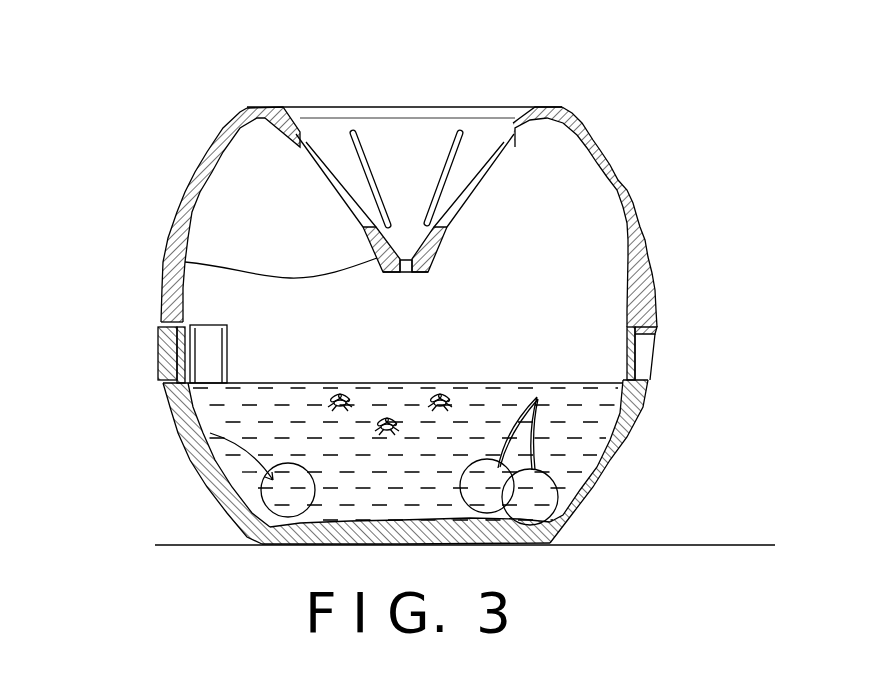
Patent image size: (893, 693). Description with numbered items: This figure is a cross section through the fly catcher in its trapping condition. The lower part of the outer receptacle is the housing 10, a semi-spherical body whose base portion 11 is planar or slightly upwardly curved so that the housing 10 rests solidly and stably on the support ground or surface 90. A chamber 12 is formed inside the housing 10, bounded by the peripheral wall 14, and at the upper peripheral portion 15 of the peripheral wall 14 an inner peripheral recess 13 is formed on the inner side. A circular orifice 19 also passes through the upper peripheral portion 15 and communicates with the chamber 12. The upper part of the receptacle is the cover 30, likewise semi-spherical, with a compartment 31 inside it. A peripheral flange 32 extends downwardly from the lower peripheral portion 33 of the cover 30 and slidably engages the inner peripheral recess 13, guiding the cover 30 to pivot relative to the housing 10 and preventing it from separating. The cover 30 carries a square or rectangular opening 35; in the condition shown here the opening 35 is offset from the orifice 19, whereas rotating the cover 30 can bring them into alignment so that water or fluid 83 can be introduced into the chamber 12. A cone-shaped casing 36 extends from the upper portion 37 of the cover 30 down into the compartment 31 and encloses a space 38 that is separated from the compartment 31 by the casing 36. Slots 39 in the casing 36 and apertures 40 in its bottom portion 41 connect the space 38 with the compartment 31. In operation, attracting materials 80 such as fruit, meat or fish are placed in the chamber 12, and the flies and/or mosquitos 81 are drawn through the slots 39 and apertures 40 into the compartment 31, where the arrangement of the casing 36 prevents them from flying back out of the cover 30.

The housing 10 is at (398, 439).
The base portion 11 is at (500, 537).
The chamber 12 is at (625, 414).
The inner peripheral recess 13 is at (177, 360).
The peripheral wall 14 is at (207, 476).
The upper peripheral portion 15 is at (185, 357).
The orifice 19 is at (645, 352).
The cover 30 is at (424, 202).
The compartment 31 is at (200, 173).
The peripheral flange 32 is at (640, 368).
The lower peripheral portion 33 is at (645, 300).
The opening 35 is at (203, 325).
The cone-shaped casing 36 is at (300, 115).
The upper portion 37 is at (237, 124).
The space 38 is at (517, 130).
The slots 39 is at (497, 162).
The apertures 40 is at (407, 272).
The bottom portion 41 is at (185, 262).
The attracting materials 80 is at (278, 512).
The flies and/or mosquitos 81 is at (437, 395).
The water or fluid 83 is at (567, 440).
The support ground or surface 90 is at (733, 583).